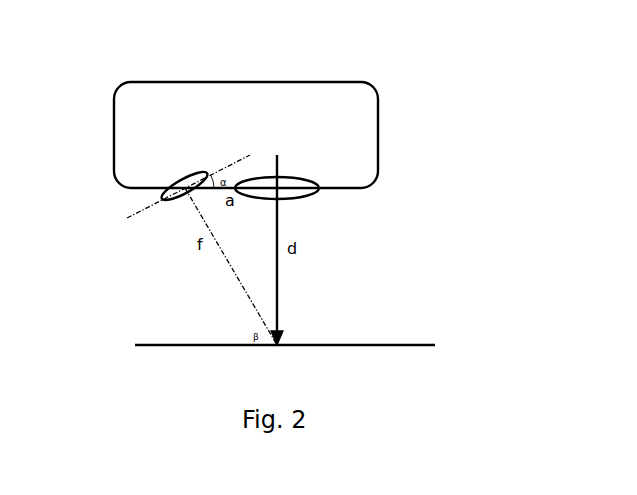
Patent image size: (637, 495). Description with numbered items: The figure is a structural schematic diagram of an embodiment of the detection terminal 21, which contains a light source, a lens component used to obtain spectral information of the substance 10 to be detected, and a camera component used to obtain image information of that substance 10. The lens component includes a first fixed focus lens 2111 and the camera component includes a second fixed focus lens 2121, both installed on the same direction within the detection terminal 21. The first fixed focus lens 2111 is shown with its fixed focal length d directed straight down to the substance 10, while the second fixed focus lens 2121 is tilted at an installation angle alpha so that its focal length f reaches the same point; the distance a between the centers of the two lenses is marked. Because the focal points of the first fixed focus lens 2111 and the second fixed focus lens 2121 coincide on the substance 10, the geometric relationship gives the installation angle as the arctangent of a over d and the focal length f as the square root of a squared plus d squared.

The detection terminal 21 is at (320, 82).
The substance to be detected 10 is at (282, 345).
The first fixed focus lens 2111 is at (295, 177).
The second fixed focus lens 2121 is at (192, 175).